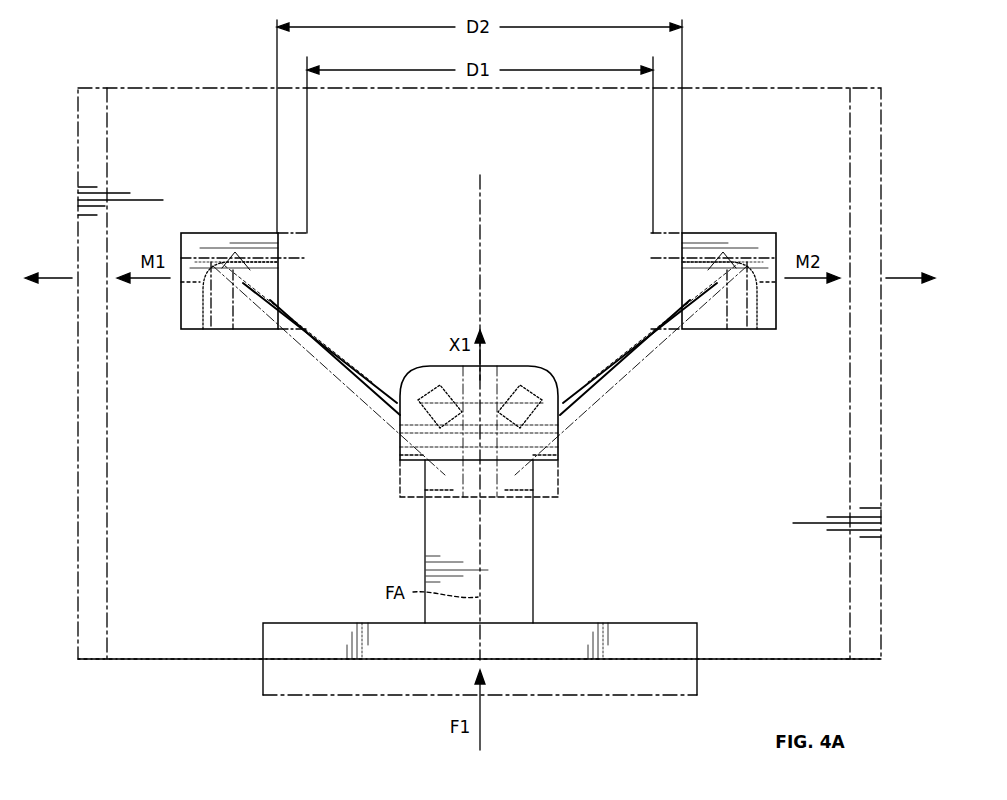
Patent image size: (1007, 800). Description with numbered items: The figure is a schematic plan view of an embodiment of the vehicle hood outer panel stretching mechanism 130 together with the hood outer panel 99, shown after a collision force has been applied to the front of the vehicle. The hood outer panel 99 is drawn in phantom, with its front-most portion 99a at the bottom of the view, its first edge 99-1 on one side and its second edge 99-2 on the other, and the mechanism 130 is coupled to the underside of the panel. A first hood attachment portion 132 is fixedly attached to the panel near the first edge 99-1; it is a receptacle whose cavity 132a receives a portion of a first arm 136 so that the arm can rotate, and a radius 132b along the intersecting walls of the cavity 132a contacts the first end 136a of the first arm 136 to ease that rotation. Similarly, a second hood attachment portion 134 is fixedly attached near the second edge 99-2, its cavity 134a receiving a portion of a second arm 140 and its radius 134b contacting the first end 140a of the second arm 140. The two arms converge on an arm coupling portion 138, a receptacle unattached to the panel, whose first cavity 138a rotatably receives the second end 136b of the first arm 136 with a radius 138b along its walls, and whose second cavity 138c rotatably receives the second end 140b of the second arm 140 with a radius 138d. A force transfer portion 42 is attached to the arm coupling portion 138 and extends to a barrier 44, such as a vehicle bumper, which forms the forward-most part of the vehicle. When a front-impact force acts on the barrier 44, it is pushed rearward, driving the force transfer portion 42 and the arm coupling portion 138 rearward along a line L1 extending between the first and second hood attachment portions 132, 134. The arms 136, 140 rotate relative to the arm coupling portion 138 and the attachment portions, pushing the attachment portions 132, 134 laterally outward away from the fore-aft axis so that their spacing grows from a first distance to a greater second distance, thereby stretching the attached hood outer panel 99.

The hood outer panel 99 is at (78, 88).
The first edge 99-1 is at (78, 210).
The second edge 99-2 is at (881, 228).
The front-most portion 99a is at (195, 663).
The line L1 is at (470, 290).
The vehicle hood outer panel stretching mechanism 130 is at (275, 368).
The first hood attachment portion 132 is at (193, 257).
The cavity 132a is at (200, 300).
The radius 132b is at (185, 292).
The second hood attachment portion 134 is at (778, 249).
The cavity 134a is at (710, 250).
The radius 134b is at (755, 262).
The first arm 136 is at (318, 355).
The first end 136a is at (222, 262).
The second end 136b is at (420, 400).
The arm coupling portion 138 is at (400, 490).
The first cavity 138a is at (398, 455).
The radius 138b is at (450, 493).
The second cavity 138c is at (560, 437).
The radius 138d is at (535, 502).
The second arm 140 is at (607, 352).
The first end 140a is at (745, 280).
The second end 140b is at (512, 400).
The force transfer portion 42 is at (512, 587).
The barrier 44 is at (675, 642).